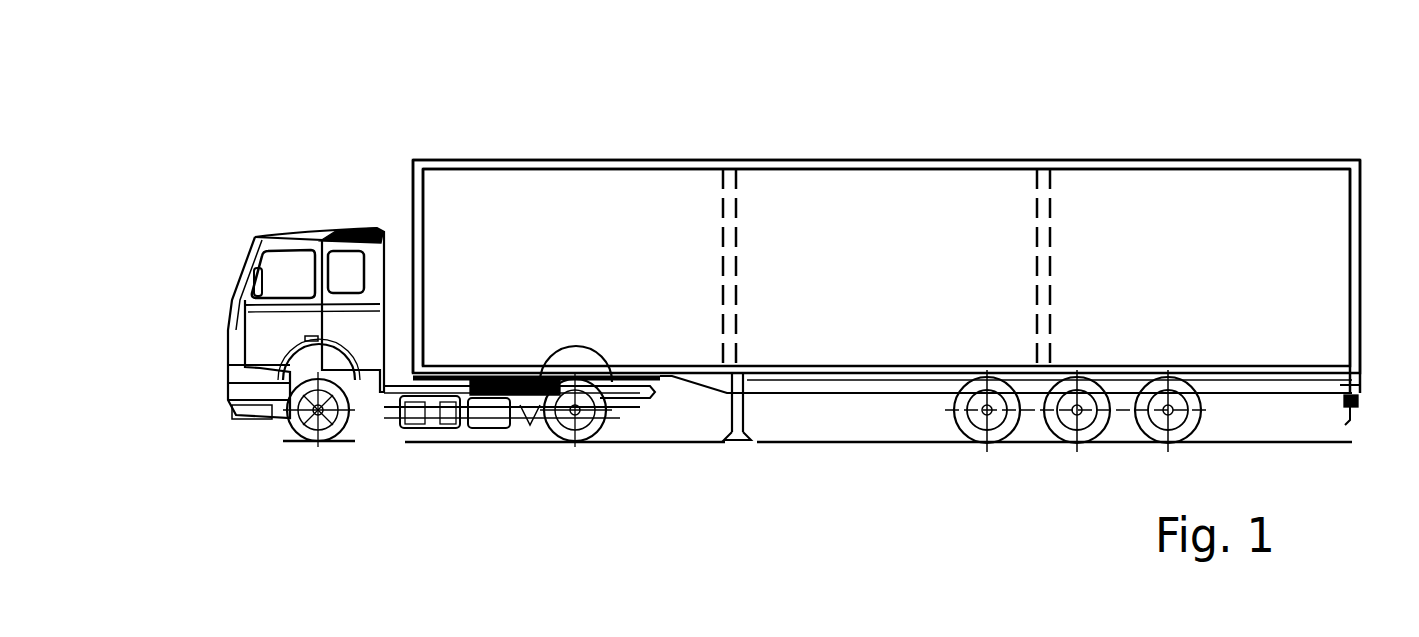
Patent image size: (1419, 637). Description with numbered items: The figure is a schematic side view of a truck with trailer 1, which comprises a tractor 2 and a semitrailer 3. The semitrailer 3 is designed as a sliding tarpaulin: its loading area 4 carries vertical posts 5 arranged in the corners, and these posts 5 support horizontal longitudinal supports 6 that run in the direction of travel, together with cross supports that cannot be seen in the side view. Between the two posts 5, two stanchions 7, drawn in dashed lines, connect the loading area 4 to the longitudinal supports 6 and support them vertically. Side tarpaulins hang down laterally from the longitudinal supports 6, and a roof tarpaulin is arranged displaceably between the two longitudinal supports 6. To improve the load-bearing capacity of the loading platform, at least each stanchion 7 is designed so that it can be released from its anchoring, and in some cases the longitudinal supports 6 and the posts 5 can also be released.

The truck with trailer 1 is at (305, 135).
The tractor 2 is at (278, 332).
The semitrailer 3 is at (1128, 150).
The loading area 4 is at (1203, 366).
The vertical posts 5 is at (423, 296).
The longitudinal supports 6 is at (550, 160).
The stanchions 7 is at (1033, 250).